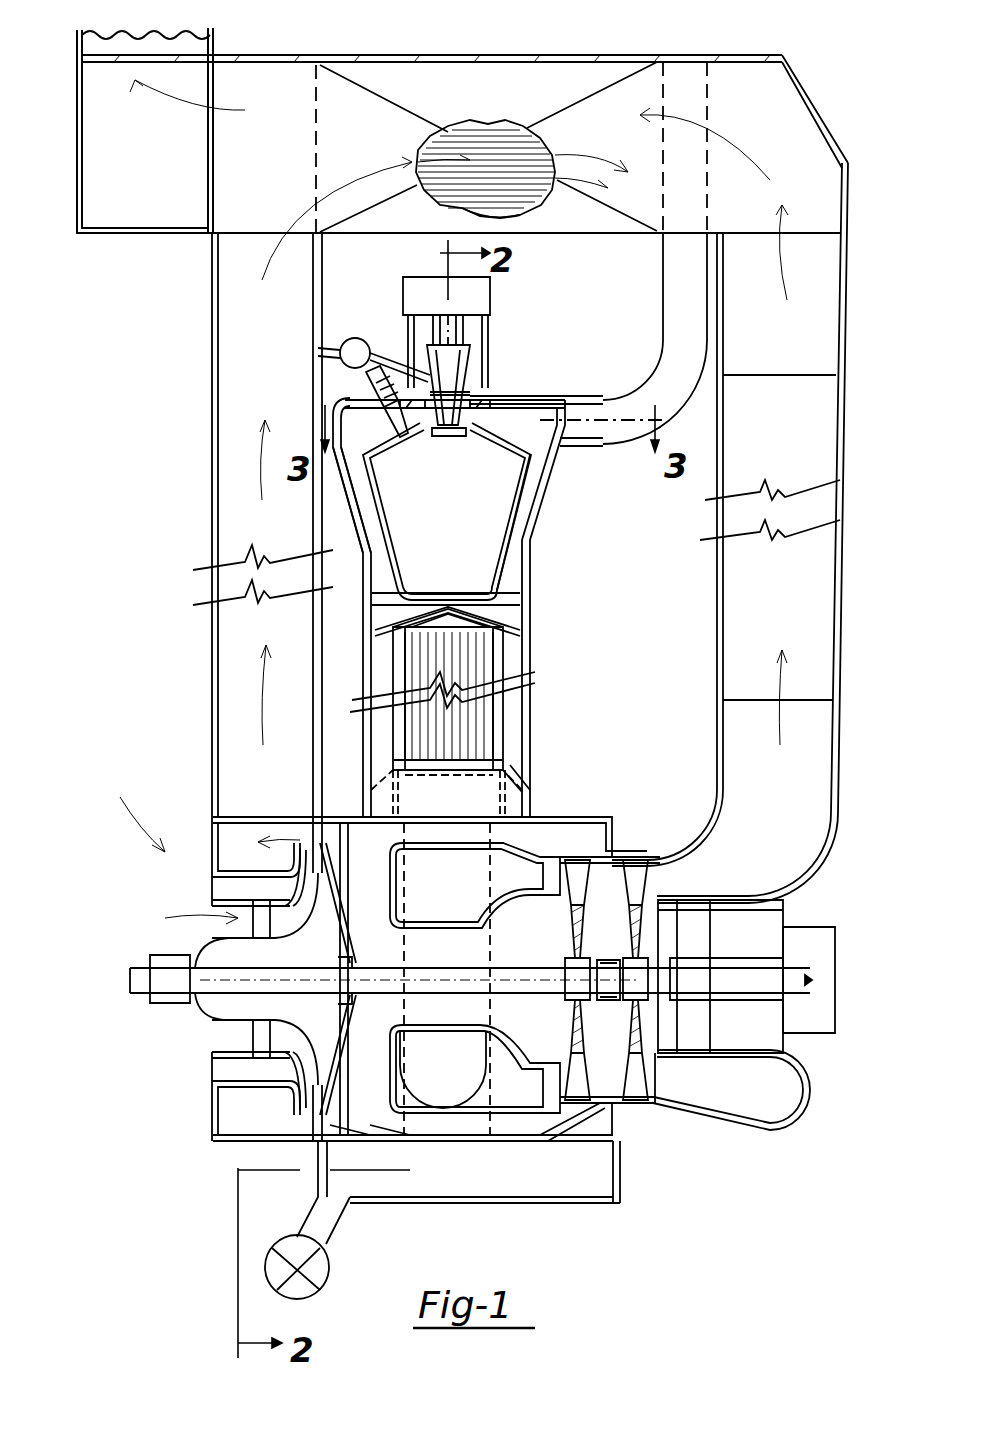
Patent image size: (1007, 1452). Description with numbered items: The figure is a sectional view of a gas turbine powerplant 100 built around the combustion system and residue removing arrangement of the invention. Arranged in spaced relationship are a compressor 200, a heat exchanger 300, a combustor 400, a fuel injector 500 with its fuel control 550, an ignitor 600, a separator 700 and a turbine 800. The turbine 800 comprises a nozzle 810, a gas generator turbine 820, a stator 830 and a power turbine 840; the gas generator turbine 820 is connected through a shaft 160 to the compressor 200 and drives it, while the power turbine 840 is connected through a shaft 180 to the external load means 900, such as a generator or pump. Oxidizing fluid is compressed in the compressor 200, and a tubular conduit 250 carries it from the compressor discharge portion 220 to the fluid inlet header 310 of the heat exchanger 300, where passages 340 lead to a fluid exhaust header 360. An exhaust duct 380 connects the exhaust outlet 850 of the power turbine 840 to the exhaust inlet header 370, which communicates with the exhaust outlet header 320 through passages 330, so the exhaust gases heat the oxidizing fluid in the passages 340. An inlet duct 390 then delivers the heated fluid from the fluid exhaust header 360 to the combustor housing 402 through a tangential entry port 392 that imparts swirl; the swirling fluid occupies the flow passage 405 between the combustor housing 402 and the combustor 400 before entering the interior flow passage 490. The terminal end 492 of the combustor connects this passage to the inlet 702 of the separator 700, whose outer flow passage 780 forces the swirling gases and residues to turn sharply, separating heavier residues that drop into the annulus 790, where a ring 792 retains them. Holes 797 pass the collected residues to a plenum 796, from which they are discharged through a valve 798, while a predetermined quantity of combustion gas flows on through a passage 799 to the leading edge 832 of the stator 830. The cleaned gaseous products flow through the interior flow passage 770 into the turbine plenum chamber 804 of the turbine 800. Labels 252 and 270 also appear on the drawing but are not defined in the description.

The gas turbine powerplant 100 is at (165, 852).
The shaft 160 is at (228, 992).
The shaft 180 is at (660, 975).
The compressor 200 is at (200, 1140).
The compressor discharge portion 220 is at (205, 830).
The tubular conduit 250 is at (212, 440).
The pressure line 252 is at (320, 348).
The pressure gauge 270 is at (380, 310).
The heat exchanger 300 is at (447, 55).
The fluid inlet header 310 is at (210, 235).
The exhaust outlet header 320 is at (258, 85).
The passages 330 is at (515, 90).
The passages 340 is at (510, 208).
The fluid exhaust header 360 is at (660, 270).
The exhaust inlet header 370 is at (755, 60).
The exhaust duct 380 is at (716, 490).
The inlet duct 390 is at (625, 405).
The tangential entry port 392 is at (487, 398).
The combustor 400 is at (540, 515).
The combustor housing 402 is at (548, 460).
The flow passage 405 is at (360, 498).
The interior flow passage 490 is at (500, 556).
The terminal end 492 is at (512, 596).
The fuel injector 500 is at (478, 348).
The fuel control 550 is at (495, 288).
The ignitor 600 is at (350, 386).
The separator 700 is at (532, 700).
The inlet 702 is at (522, 627).
The interior flow passage 770 is at (465, 745).
The outer flow passage 780 is at (515, 657).
The annulus 790 is at (528, 760).
The ring 792 is at (598, 772).
The plenum 796 is at (480, 1205).
The holes 797 is at (398, 1135).
The valve 798 is at (265, 1265).
The passage 799 is at (555, 1130).
The turbine 800 is at (595, 885).
The turbine plenum chamber 804 is at (478, 1137).
The nozzle 810 is at (563, 845).
The gas generator turbine 820 is at (588, 855).
The stator 830 is at (640, 858).
The leading edge 832 is at (606, 1098).
The power turbine 840 is at (660, 860).
The exhaust outlet 850 is at (740, 1115).
The external load means 900 is at (822, 948).